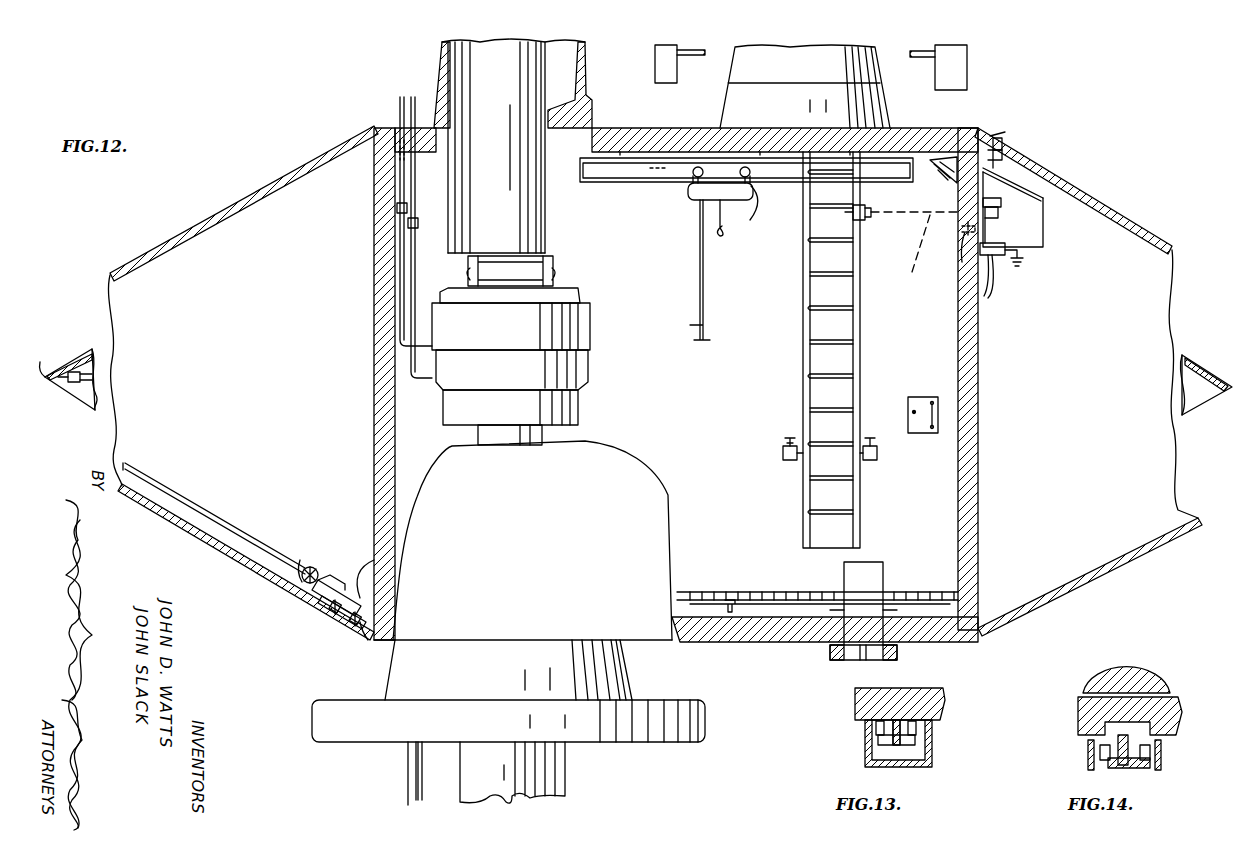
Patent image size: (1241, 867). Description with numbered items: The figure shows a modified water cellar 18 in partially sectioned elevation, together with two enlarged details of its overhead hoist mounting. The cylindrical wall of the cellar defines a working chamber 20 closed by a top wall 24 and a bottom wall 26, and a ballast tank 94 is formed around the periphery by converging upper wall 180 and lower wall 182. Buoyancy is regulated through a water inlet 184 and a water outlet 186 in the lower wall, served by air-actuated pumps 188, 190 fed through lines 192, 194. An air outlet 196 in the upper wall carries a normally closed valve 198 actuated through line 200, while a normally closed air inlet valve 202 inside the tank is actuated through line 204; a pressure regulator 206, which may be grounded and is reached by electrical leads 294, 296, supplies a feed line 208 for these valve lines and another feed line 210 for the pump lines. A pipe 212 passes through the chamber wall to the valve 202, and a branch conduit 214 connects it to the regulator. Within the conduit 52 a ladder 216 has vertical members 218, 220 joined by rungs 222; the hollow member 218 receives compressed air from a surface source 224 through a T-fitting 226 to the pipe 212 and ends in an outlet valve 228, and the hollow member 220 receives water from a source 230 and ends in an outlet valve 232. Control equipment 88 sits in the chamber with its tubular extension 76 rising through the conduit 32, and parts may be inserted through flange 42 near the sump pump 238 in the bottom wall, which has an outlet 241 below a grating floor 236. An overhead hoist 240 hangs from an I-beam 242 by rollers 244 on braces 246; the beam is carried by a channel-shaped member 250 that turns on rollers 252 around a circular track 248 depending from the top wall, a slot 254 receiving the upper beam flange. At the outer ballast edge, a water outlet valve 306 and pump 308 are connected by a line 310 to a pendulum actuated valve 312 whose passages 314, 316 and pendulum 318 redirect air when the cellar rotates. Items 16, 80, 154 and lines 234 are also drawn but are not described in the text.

In FIG. 12, the drill pipe 16 is at (568, 774).
In FIG. 12, the water cellar 18 is at (275, 112).
In FIG. 12, the working chamber 20 is at (700, 436).
In FIG. 12, the top wall 24 is at (905, 148).
In FIG. 13, the top wall 24 is at (935, 708).
In FIG. 14, the top wall 24 is at (1125, 680).
In FIG. 12, the bottom wall 26 is at (775, 642).
In FIG. 12, the conduit 32 is at (442, 60).
In FIG. 12, the flange 42 is at (605, 680).
In FIG. 12, the conduit 52 is at (814, 70).
In FIG. 12, the tubular extension 76 is at (478, 210).
In FIG. 12, the pipe 80 is at (408, 786).
In FIG. 12, the control equipment 88 is at (598, 372).
In FIG. 12, the ballast tank 94 is at (250, 360).
In FIG. 12, the flange 154 is at (460, 728).
In FIG. 12, the upper wall 180 is at (252, 185).
In FIG. 12, the lower wall 182 is at (76, 408).
In FIG. 12, the water inlet 184 is at (364, 642).
In FIG. 12, the water outlet 186 is at (330, 614).
In FIG. 12, the water pump 188 is at (352, 628).
In FIG. 12, the water pump 190 is at (318, 600).
In FIG. 12, the air line 192 is at (370, 600).
In FIG. 12, the air line 194 is at (326, 574).
In FIG. 12, the air outlet 196 is at (1004, 138).
In FIG. 12, the air outlet valve 198 is at (1004, 156).
In FIG. 12, the air line 200 is at (1044, 178).
In FIG. 12, the air inlet valve 202 is at (998, 212).
In FIG. 12, the air line 204 is at (1010, 196).
In FIG. 12, the pressure regulator 206 is at (1000, 256).
In FIG. 12, the feed line 208 is at (1044, 232).
In FIG. 12, the feed line 210 is at (990, 300).
In FIG. 12, the pipe 212 is at (914, 243).
In FIG. 12, the branch conduit 214 is at (990, 228).
In FIG. 12, the ladder 216 is at (800, 334).
In FIG. 12, the vertical member 218 is at (829, 350).
In FIG. 12, the vertical member 220 is at (805, 382).
In FIG. 12, the rungs 222 is at (828, 268).
In FIG. 12, the fluid pressure source 224 is at (967, 70).
In FIG. 12, the T-fitting 226 is at (853, 214).
In FIG. 12, the outlet valve 228 is at (876, 460).
In FIG. 12, the water source 230 is at (655, 64).
In FIG. 12, the outlet valve 232 is at (784, 460).
In FIG. 12, the pipes 234 is at (405, 186).
In FIG. 12, the floor 236 is at (696, 594).
In FIG. 12, the sump pump 238 is at (884, 586).
In FIG. 12, the overhead hoist 240 is at (690, 196).
In FIG. 12, the outlet 241 is at (860, 662).
In FIG. 12, the I-beam 242 is at (782, 185).
In FIG. 14, the I-beam 242 is at (1118, 742).
In FIG. 12, the rollers 244 is at (721, 172).
In FIG. 14, the rollers 244 is at (1152, 750).
In FIG. 12, the braces 246 is at (751, 222).
In FIG. 14, the braces 246 is at (1088, 766).
In FIG. 13, the circular track 248 is at (916, 742).
In FIG. 13, the channel-shaped member 250 is at (865, 750).
In FIG. 14, the channel-shaped member 250 is at (1090, 712).
In FIG. 13, the rollers 252 is at (878, 728).
In FIG. 14, the slot 254 is at (1178, 720).
In FIG. 12, the electrical lead 294 is at (951, 226).
In FIG. 12, the electrical lead 296 is at (955, 262).
In FIG. 12, the water outlet valve 306 is at (53, 355).
In FIG. 12, the hydraulic pump 308 is at (82, 372).
In FIG. 12, the line 310 is at (220, 512).
In FIG. 12, the pendulum actuated valve 312 is at (300, 580).
In FIG. 12, the passage 314 is at (310, 566).
In FIG. 12, the passage 316 is at (296, 560).
In FIG. 12, the pendulum 318 is at (312, 593).